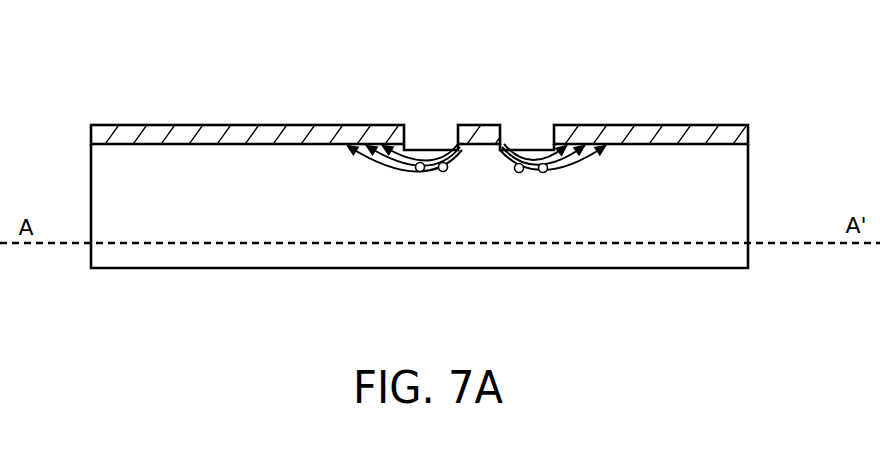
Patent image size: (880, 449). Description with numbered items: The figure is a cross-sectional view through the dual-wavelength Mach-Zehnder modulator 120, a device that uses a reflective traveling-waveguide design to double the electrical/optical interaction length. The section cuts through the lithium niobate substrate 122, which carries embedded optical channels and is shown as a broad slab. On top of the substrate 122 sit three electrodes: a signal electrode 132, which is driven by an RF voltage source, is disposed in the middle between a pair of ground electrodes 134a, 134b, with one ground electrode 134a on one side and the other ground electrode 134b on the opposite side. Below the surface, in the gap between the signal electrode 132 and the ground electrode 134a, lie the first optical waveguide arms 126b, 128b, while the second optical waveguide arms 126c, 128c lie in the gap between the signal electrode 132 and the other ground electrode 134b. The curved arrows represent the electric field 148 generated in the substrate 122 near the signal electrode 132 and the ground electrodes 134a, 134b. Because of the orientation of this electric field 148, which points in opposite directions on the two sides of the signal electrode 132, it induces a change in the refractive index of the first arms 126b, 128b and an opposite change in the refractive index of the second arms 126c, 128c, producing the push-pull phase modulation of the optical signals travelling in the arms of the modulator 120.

The dual-wavelength Mach-Zehnder modulator 120 is at (107, 78).
The lithium niobate substrate 122 is at (733, 205).
The ground electrode 134b is at (238, 125).
The signal electrode 132 is at (480, 125).
The ground electrode 134a is at (670, 125).
The electric field 148 is at (378, 166).
The second arm 128c is at (420, 172).
The second arm 126c is at (447, 171).
The first arm 128b is at (519, 173).
The first arm 126b is at (548, 172).